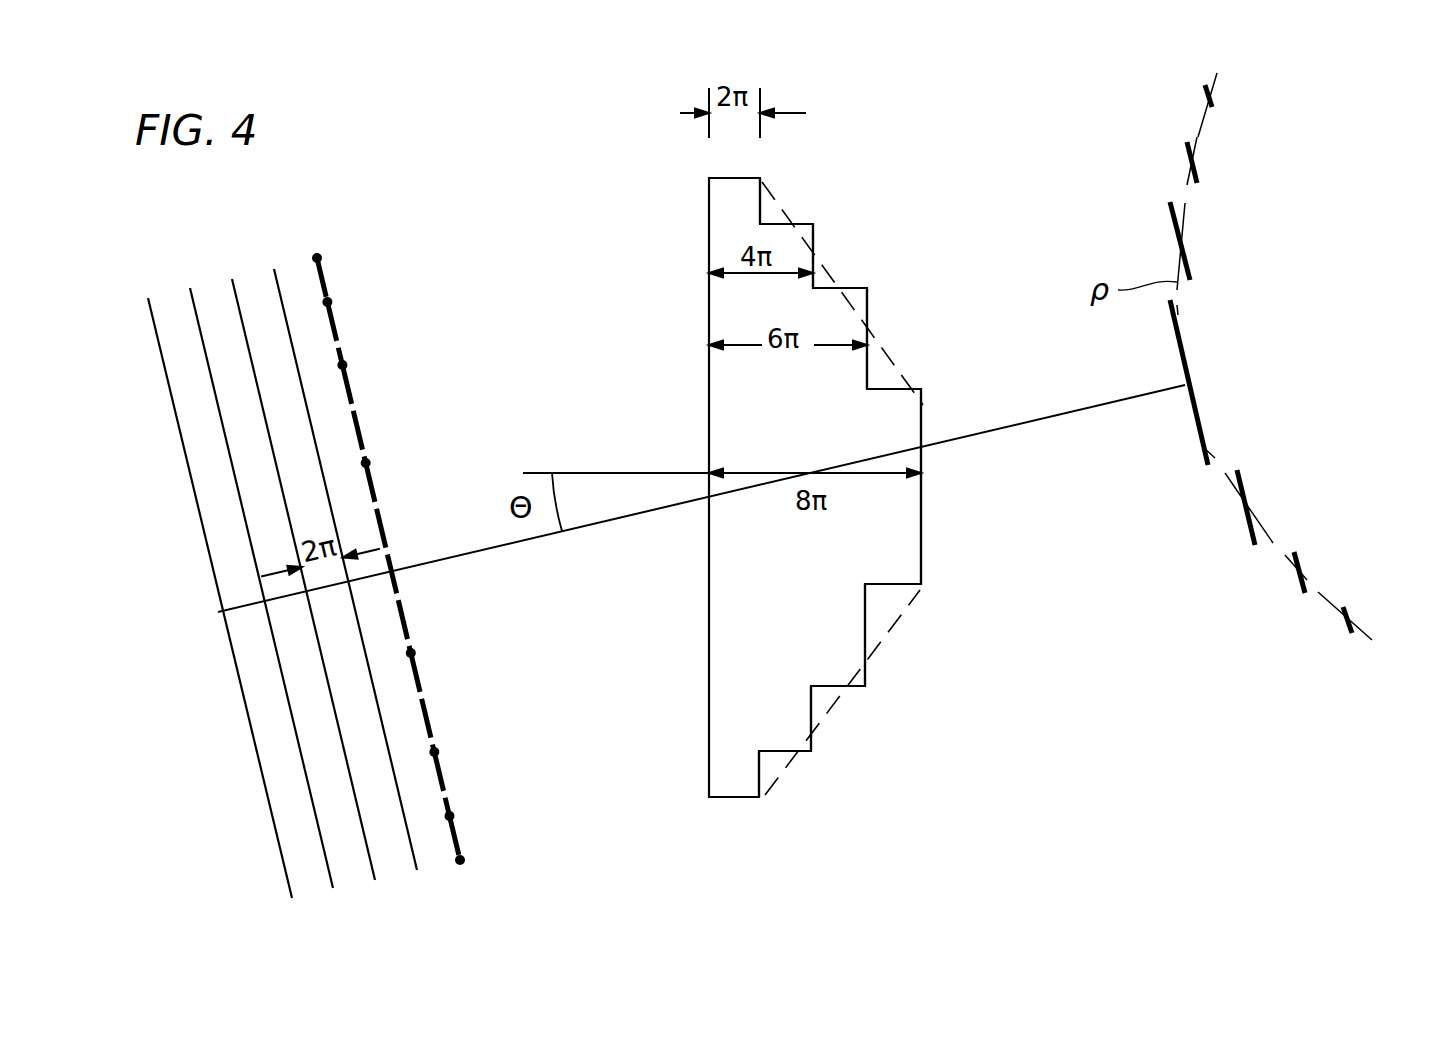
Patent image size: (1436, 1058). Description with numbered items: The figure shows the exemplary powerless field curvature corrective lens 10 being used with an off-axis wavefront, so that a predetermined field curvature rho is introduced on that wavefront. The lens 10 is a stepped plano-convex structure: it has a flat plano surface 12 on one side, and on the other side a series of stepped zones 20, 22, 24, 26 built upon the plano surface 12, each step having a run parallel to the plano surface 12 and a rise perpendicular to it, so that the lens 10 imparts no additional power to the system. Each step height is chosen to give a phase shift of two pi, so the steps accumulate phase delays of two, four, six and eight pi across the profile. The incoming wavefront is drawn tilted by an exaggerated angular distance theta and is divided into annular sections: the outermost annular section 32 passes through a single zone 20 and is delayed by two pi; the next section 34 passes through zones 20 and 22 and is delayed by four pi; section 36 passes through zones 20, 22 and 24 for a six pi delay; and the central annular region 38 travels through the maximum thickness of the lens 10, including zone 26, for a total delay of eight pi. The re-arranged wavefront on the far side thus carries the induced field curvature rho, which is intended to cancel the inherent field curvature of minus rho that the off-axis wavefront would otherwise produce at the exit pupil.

The field curvature corrective lens 10 is at (735, 770).
The plano surface 12 is at (707, 532).
The zone 20 is at (762, 212).
The zone 22 is at (807, 258).
The zone 24 is at (852, 357).
The zone 26 is at (910, 515).
The outermost annular section 32 is at (324, 256).
The annular section 34 is at (334, 300).
The annular section 36 is at (349, 363).
The central annular region 38 is at (418, 651).